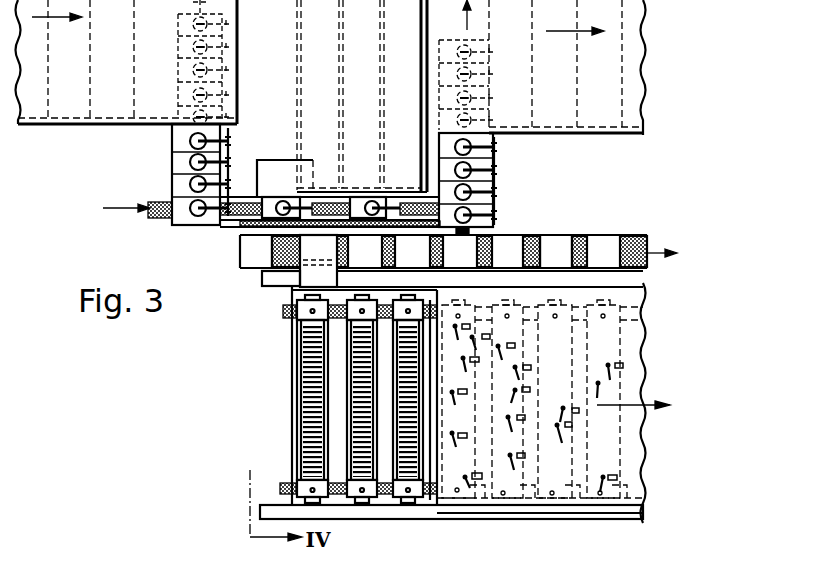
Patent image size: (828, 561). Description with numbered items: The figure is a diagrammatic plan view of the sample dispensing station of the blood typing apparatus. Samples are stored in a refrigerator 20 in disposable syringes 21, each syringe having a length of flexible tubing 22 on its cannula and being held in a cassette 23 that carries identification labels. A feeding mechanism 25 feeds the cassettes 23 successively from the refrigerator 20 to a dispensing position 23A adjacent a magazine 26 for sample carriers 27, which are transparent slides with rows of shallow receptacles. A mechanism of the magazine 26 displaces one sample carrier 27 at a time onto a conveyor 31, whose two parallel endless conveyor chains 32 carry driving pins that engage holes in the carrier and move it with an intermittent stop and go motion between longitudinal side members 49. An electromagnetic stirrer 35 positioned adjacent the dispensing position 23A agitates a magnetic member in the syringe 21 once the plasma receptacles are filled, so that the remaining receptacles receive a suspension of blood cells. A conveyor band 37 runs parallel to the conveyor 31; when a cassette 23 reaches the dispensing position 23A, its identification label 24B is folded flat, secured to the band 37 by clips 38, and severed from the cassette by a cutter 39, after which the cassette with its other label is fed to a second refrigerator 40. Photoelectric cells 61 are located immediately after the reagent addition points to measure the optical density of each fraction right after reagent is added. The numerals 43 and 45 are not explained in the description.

The refrigerator 20 is at (77, 110).
The syringe 21 is at (198, 160).
The flexible tubing 22 is at (225, 148).
The cassette 23 is at (182, 204).
The dispensing position 23A is at (262, 232).
The identification label 24B is at (600, 256).
The feeding mechanism 25 is at (162, 222).
The magazine 26 is at (304, 56).
The sample carrier 27 is at (350, 372).
The conveyor 31 is at (276, 405).
The conveyor chain 32 is at (288, 318).
The electromagnetic stirrer 35 is at (262, 168).
The conveyor band 37 is at (640, 252).
The clip 38 is at (546, 266).
The cutter 39 is at (262, 240).
The refrigerator 40 is at (590, 136).
The cartridge holders 43 is at (606, 478).
The support rail 45 is at (477, 506).
The longitudinal side member 49 is at (280, 280).
The photoelectric cell 61 is at (520, 457).